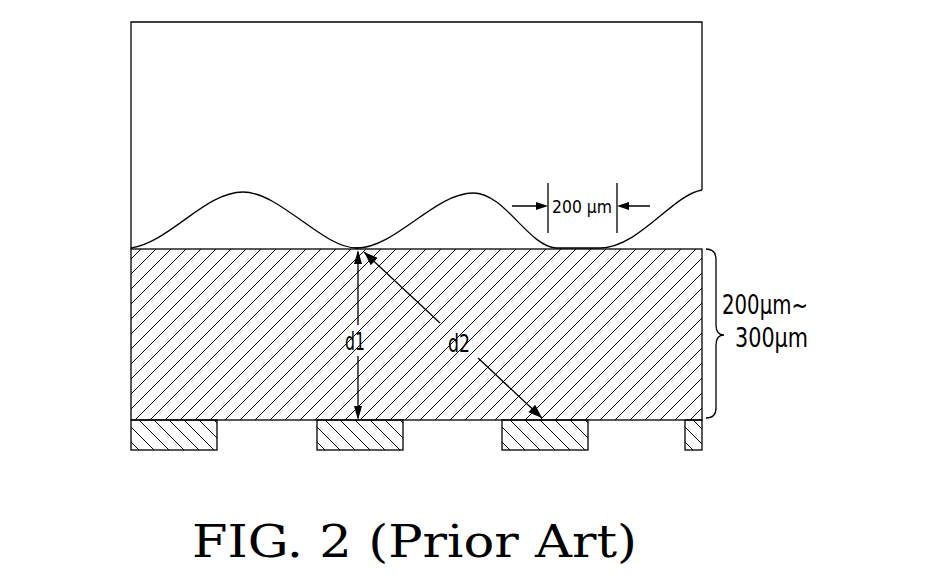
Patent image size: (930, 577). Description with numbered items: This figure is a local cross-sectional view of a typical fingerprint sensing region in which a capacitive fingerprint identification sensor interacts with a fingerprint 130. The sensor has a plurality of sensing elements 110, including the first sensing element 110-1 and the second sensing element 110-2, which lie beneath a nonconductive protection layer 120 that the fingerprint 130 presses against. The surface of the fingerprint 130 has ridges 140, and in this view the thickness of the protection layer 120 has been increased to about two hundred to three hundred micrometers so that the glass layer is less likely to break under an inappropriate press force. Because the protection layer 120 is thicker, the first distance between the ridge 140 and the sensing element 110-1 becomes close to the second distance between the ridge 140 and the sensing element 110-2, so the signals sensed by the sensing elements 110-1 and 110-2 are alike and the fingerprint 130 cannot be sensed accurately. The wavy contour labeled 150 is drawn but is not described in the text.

The sensing elements 110 is at (131, 437).
The sensing element 110-1 is at (317, 433).
The sensing element 110-2 is at (502, 433).
The protection layer 120 is at (131, 333).
The fingerprint 130 is at (131, 214).
The ridge 140 is at (358, 248).
The wavy surface 150 is at (472, 192).